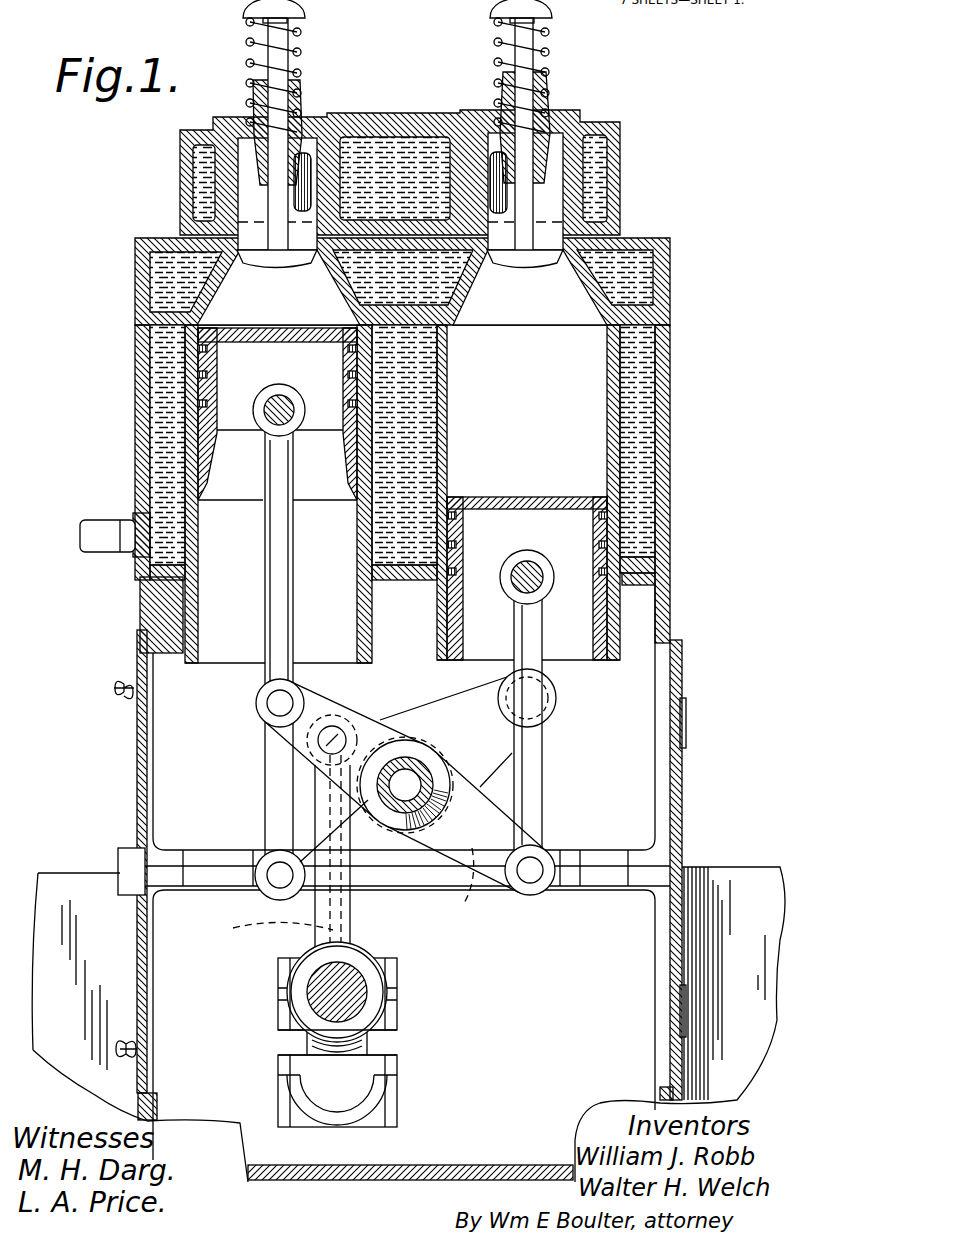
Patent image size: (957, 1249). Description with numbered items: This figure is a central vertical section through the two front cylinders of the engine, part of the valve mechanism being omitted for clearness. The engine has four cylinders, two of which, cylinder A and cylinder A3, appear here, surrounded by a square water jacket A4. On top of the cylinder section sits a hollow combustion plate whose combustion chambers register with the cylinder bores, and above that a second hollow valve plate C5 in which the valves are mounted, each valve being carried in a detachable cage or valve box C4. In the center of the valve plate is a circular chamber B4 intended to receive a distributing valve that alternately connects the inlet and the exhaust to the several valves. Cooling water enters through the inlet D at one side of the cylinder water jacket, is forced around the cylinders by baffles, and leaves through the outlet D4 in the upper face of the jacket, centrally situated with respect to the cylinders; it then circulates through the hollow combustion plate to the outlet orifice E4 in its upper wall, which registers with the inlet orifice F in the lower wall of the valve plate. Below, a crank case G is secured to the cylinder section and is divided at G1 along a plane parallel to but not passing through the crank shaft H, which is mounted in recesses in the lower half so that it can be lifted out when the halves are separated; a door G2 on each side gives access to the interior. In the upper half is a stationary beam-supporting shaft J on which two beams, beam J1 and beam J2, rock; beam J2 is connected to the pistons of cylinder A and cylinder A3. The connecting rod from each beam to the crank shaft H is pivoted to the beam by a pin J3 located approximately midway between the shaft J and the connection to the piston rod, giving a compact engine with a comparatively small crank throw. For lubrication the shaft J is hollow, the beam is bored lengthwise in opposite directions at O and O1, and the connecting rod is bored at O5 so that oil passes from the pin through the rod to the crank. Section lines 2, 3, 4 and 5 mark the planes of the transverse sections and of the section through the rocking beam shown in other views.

The cylinder A is at (278, 495).
The cylinder A3 is at (528, 639).
The water jacket A4 is at (655, 410).
The circular chamber B4 is at (135, 254).
The valve box C4 is at (318, 143).
The valve plate C5 is at (613, 147).
The water inlet D is at (100, 555).
The outlet D4 is at (300, 378).
The outlet orifice E4 is at (468, 285).
The inlet orifice F is at (312, 278).
The crank case G is at (660, 603).
The division plane G1 is at (120, 872).
The door G2 is at (150, 777).
The crank shaft H is at (325, 1050).
The beam-supporting shaft J is at (433, 777).
The beam J1 is at (386, 828).
The beam J2 is at (490, 870).
The pin J3 is at (322, 742).
The oil way O is at (357, 747).
The oil way O1 is at (464, 892).
The connecting rod bore O5 is at (264, 938).
The section line 2 is at (135, 537).
The section line 3 is at (138, 280).
The section line 4 is at (268, 193).
The section line 5 is at (258, 685).